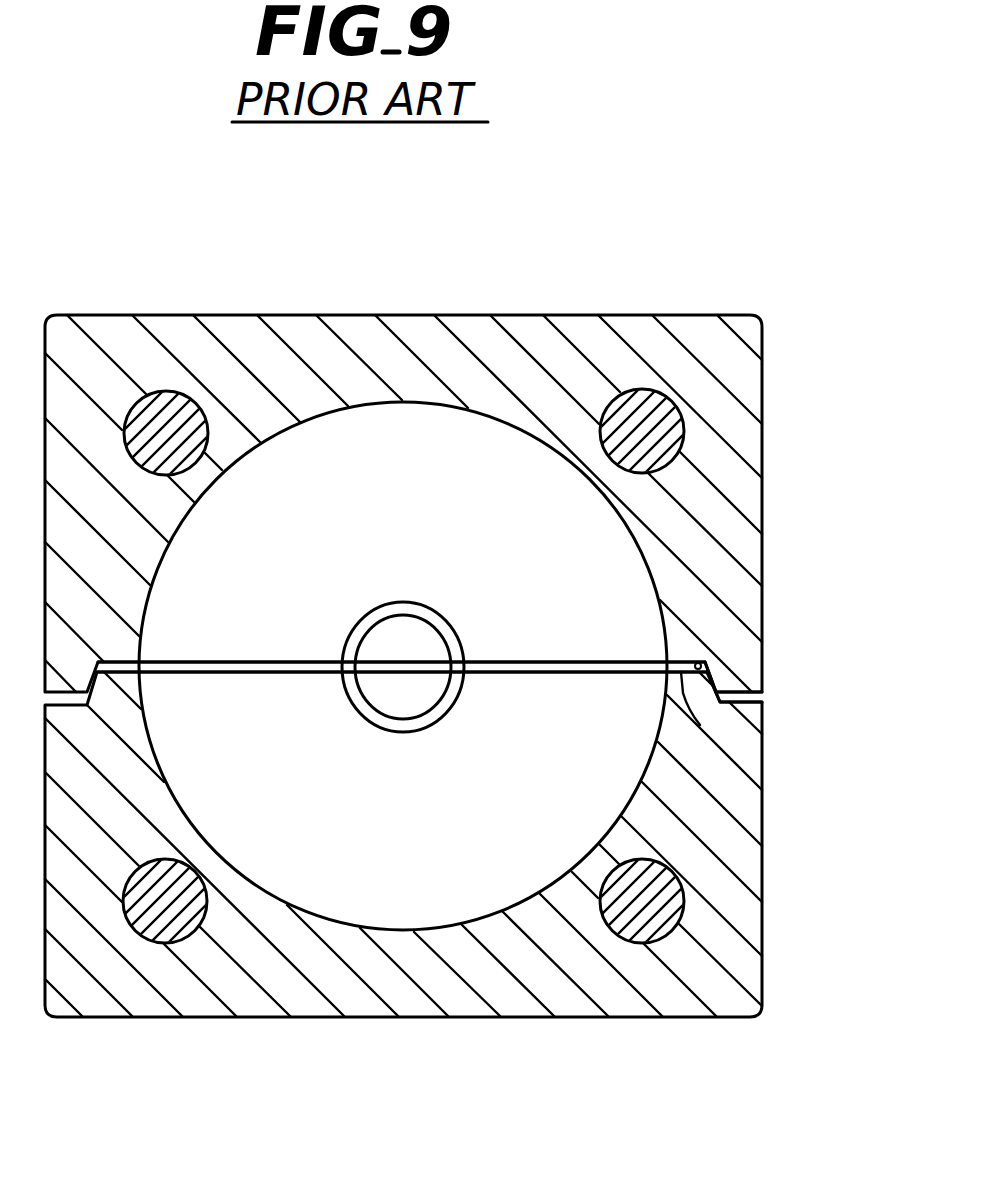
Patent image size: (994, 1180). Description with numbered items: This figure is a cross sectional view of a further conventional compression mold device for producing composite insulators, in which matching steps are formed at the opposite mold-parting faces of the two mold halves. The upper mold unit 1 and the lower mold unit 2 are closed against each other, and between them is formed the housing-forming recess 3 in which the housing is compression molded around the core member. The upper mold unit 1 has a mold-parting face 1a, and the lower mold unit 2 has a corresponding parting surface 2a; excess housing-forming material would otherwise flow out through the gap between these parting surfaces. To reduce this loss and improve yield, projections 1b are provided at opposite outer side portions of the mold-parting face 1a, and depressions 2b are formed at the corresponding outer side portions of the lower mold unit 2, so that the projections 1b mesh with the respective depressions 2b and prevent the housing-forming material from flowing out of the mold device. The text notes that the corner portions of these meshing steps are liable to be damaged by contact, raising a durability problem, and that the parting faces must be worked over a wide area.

The upper mold unit 1 is at (733, 440).
The mold-parting face 1a is at (704, 658).
The projection 1b is at (735, 690).
The lower mold unit 2 is at (733, 912).
The parting surface 2a is at (700, 725).
The depression 2b is at (744, 708).
The housing-forming recess 3 is at (481, 418).